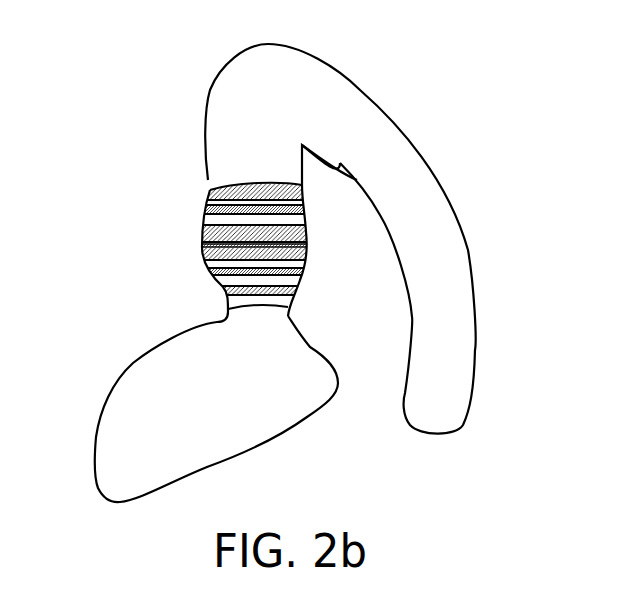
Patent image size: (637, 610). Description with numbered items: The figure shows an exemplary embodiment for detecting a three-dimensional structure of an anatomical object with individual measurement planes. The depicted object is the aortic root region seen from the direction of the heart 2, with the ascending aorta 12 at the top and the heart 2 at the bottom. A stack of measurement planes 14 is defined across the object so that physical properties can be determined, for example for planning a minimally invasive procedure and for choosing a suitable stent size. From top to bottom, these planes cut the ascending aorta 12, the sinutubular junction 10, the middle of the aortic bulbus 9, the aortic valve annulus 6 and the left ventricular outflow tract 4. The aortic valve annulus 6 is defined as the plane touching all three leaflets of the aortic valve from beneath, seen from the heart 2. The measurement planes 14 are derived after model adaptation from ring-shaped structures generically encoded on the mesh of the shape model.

The heart 2 is at (125, 482).
The left ventricular outflow tract 4 is at (343, 293).
The aortic valve annulus 6 is at (337, 273).
The middle of the aortic bulbus 9 is at (337, 247).
The sinutubular junction 10 is at (337, 212).
The ascending aorta 12 is at (234, 115).
The measurement planes 14 is at (110, 172).